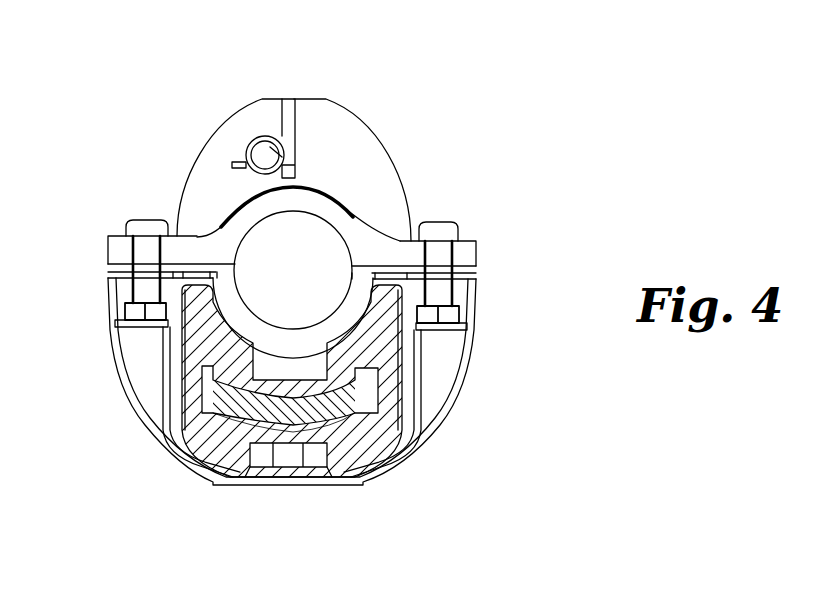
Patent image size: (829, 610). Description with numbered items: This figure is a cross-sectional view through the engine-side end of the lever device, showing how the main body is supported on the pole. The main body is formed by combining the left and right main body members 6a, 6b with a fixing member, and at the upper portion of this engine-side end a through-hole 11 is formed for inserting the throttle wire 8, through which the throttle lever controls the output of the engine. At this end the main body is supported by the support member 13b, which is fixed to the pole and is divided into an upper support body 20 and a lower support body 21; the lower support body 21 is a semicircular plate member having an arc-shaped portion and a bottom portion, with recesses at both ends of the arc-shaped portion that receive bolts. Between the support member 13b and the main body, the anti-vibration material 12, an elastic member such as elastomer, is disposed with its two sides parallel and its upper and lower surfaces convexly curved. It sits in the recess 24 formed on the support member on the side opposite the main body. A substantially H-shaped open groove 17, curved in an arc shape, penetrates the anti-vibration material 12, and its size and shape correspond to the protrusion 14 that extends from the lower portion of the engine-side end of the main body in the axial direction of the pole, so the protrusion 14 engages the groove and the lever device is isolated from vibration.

The left main body member 6a is at (210, 135).
The right main body member 6b is at (373, 127).
The throttle wire 8 is at (282, 147).
The through-hole 11 is at (297, 163).
The upper support body 20 is at (341, 223).
The support member 13b is at (458, 217).
The anti-vibration material 12 is at (385, 337).
The recess 24 is at (202, 396).
The open groove 17 is at (255, 420).
The protrusion 14 is at (302, 413).
The lower support body 21 is at (430, 427).